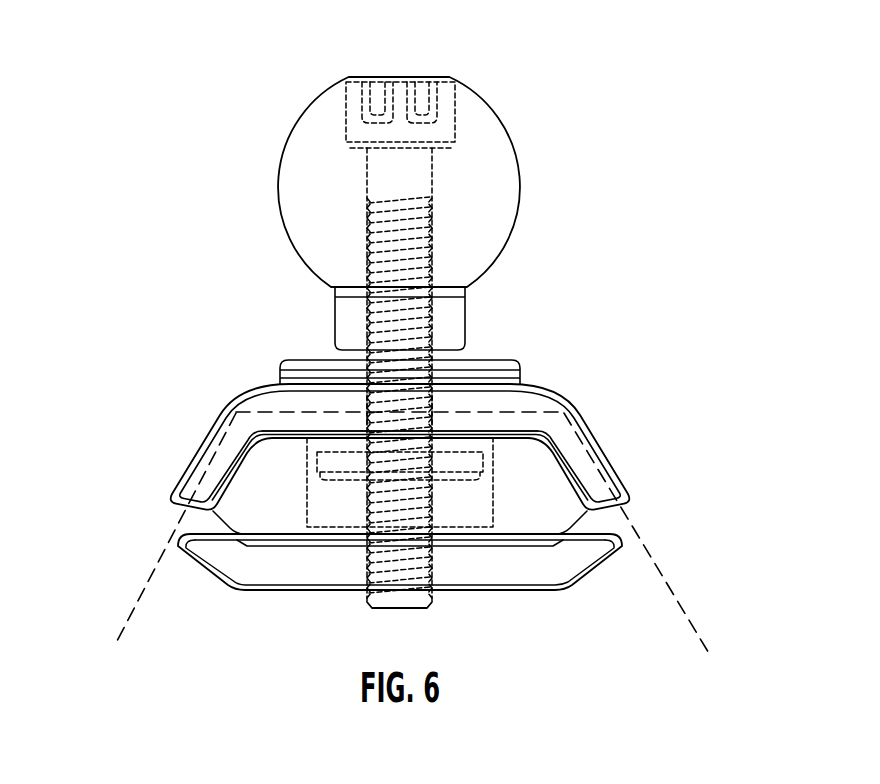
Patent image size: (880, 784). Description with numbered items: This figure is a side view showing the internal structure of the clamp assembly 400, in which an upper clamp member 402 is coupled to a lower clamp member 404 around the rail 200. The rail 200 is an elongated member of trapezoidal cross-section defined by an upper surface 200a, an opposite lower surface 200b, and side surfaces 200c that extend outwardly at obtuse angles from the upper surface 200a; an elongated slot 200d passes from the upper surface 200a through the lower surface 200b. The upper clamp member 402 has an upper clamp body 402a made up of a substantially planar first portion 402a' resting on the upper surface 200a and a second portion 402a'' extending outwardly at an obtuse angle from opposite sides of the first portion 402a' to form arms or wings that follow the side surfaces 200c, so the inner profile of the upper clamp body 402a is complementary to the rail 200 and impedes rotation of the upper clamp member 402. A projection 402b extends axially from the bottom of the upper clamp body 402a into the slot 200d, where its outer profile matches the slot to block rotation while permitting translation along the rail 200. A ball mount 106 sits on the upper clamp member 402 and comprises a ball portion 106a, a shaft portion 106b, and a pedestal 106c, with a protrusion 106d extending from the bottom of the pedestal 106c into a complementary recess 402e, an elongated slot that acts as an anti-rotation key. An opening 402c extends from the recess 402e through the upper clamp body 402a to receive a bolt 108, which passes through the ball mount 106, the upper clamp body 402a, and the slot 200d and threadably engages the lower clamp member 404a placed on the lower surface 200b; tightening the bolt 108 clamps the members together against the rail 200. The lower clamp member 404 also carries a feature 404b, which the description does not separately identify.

The clamp assembly 400 is at (316, 66).
The ball mount 106 is at (552, 225).
The ball portion 106a is at (490, 193).
The shaft portion 106b is at (458, 330).
The pedestal 106c is at (280, 380).
The protrusion 106d is at (448, 409).
The bolt 108 is at (428, 160).
The upper clamp member 402 is at (655, 388).
The upper clamp body 402a is at (404, 375).
The first portion 402a' is at (538, 389).
The second portion 402a'' is at (235, 487).
The projection 402b is at (489, 464).
The opening 402c is at (525, 398).
The recess 402e is at (356, 388).
The rail 200 is at (584, 519).
The upper surface 200a is at (318, 455).
The lower surface 200b is at (273, 537).
The side surfaces 200c is at (250, 488).
The elongated slot 200d is at (314, 461).
The lower clamp member 404 is at (516, 585).
The lower clamp member 404a is at (347, 578).
The base plate center web 404b is at (444, 575).